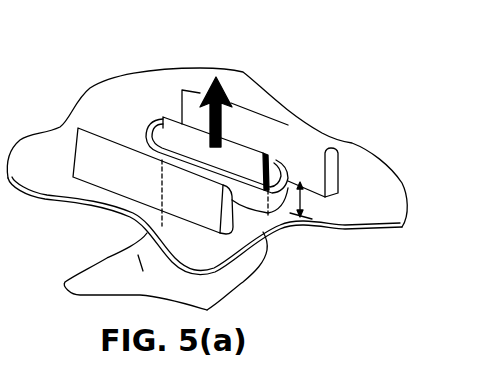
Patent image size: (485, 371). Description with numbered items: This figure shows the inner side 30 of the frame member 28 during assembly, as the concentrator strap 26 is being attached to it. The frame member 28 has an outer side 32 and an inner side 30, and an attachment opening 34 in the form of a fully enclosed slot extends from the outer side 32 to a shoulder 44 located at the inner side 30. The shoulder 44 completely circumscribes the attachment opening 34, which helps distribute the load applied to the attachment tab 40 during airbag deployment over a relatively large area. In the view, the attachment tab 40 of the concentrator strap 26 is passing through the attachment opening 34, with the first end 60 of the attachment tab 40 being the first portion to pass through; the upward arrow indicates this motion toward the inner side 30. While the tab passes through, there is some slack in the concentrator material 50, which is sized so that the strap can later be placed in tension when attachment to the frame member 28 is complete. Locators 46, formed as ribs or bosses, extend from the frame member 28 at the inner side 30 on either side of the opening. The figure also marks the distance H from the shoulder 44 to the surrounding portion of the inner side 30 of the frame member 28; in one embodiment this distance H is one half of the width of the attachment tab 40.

The concentrator strap 26 is at (262, 269).
The frame member 28 is at (352, 143).
The inner side 30 is at (219, 78).
The outer side 32 is at (78, 216).
The attachment opening 34 is at (270, 113).
The attachment tab 40 is at (223, 157).
The shoulder 44 is at (152, 128).
The locators 46 is at (80, 164).
The concentrator material 50 is at (138, 255).
The first end 60 is at (167, 113).
The distance H is at (312, 210).